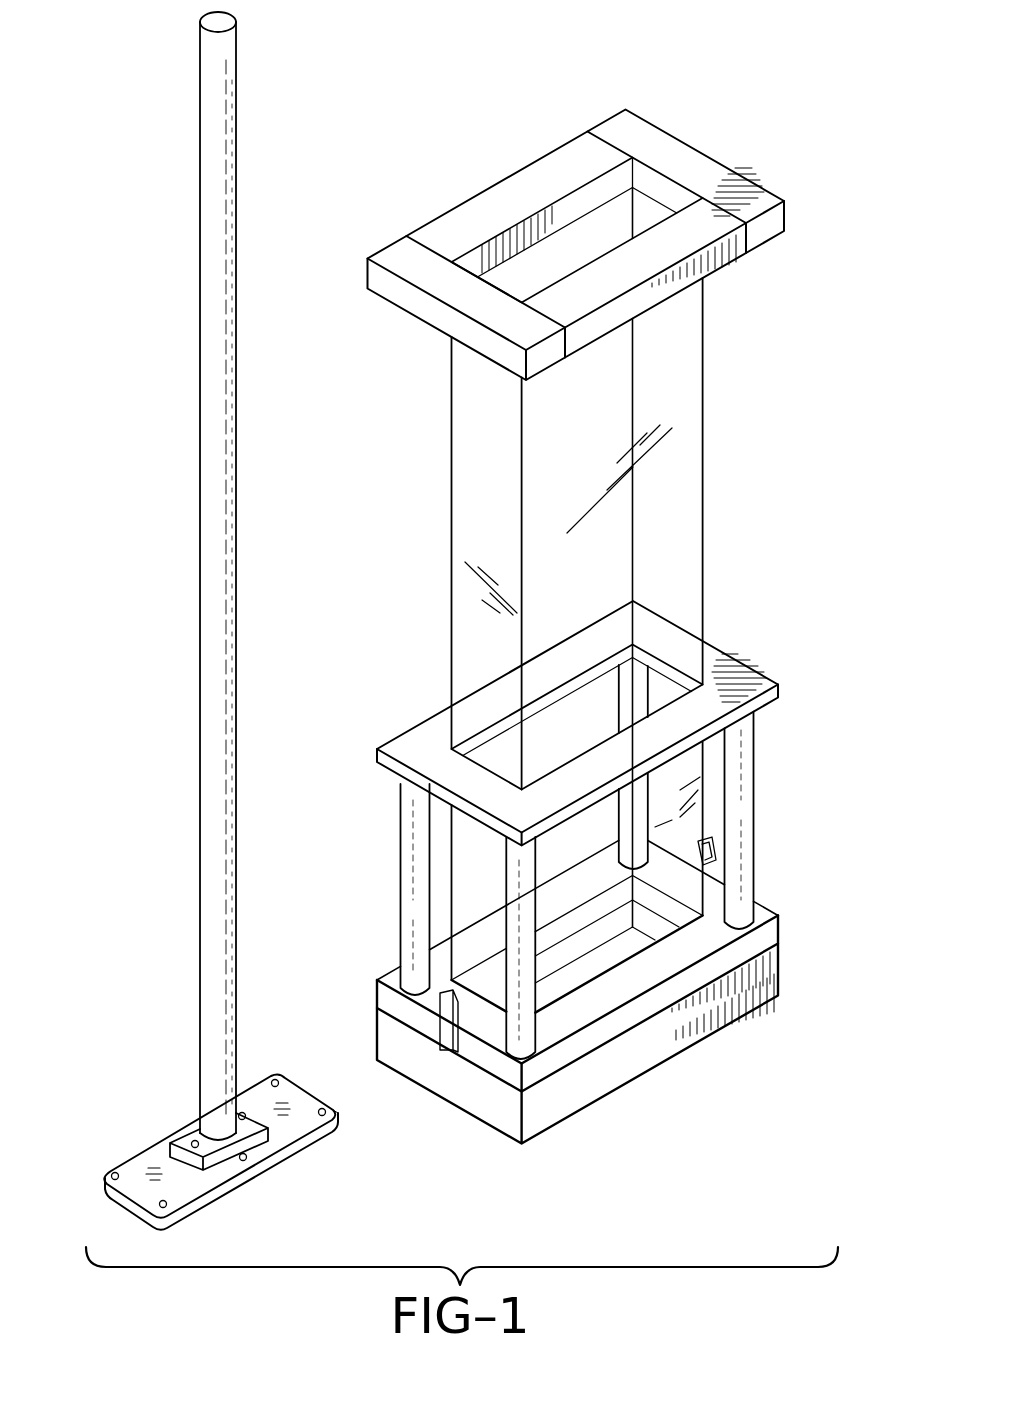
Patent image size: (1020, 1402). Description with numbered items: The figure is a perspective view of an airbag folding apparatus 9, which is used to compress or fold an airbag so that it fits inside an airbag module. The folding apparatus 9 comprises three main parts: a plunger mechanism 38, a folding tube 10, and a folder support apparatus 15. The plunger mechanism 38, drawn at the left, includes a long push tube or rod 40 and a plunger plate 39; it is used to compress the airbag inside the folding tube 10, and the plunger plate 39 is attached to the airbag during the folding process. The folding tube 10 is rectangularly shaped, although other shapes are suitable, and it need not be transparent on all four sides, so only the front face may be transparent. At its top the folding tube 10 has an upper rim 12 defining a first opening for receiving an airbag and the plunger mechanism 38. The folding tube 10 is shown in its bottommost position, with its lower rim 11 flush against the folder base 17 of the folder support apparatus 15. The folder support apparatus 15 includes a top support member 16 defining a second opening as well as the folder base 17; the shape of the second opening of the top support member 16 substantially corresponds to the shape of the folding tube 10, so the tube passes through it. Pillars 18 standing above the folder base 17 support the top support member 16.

The folding apparatus 9 is at (386, 96).
The folding tube 10 is at (705, 372).
The lower rim 11 is at (703, 942).
The upper rim 12 is at (696, 160).
The folder support apparatus 15 is at (770, 751).
The top support member 16 is at (728, 667).
The folder base 17 is at (602, 1077).
The pillars 18 is at (745, 851).
The plunger mechanism 38 is at (206, 621).
The plunger plate 39 is at (227, 1182).
The push tube or rod 40 is at (210, 862).